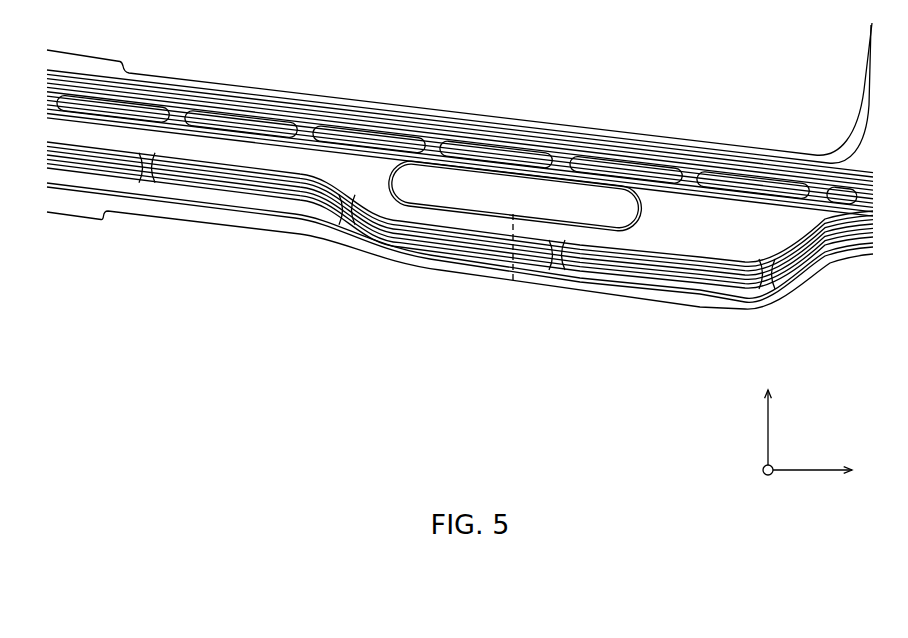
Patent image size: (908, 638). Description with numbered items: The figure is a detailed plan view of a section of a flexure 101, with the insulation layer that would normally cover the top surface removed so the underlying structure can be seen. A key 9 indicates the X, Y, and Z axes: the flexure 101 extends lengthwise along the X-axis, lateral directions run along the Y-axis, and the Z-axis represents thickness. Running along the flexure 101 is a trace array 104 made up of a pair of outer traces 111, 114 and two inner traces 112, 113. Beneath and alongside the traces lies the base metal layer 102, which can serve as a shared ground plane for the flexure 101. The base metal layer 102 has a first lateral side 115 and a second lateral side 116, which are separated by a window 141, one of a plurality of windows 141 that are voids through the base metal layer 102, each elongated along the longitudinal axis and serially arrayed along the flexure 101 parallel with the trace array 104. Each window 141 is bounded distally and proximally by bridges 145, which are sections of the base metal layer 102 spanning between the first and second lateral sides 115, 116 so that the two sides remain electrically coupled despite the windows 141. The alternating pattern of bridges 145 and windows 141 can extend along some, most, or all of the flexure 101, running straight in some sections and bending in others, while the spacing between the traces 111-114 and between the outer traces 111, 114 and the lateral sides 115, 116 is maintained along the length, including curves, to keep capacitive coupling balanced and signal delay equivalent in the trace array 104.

The key 9 is at (708, 455).
The flexure 101 is at (218, 388).
The base metal layer 102 is at (665, 297).
The trace array 104 is at (418, 80).
The outer trace 111 is at (413, 232).
The inner trace 112 is at (414, 237).
The inner trace 113 is at (427, 241).
The outer trace 114 is at (440, 248).
The first lateral side 115 is at (527, 230).
The second lateral side 116 is at (482, 260).
The window 141 is at (203, 188).
The bridge 145 is at (557, 268).